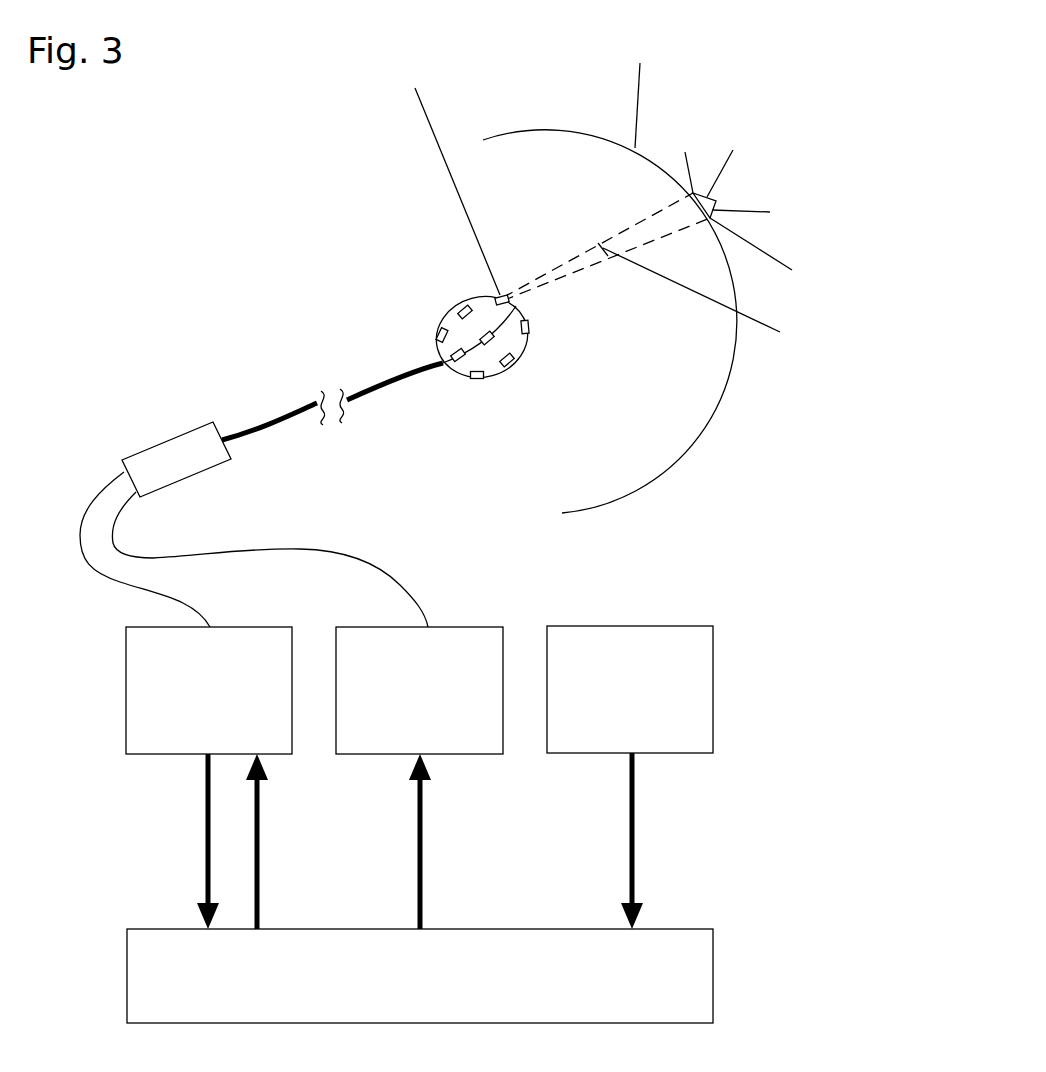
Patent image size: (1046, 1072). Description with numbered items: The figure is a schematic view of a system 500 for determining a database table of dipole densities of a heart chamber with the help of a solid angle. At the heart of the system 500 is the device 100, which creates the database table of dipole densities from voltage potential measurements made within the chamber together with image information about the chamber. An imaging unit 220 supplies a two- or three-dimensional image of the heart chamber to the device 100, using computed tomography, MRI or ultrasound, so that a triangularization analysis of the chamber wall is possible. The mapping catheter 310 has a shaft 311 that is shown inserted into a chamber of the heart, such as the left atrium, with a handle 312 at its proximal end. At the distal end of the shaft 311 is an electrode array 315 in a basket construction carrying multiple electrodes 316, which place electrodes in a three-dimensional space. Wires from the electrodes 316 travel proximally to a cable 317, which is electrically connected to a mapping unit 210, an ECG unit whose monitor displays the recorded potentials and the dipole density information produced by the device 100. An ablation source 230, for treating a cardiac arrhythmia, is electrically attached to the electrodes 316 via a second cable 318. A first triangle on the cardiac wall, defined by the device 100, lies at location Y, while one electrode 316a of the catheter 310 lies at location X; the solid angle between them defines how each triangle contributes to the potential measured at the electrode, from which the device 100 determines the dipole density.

The system 500 is at (140, 189).
The mapping catheter 310 is at (155, 374).
The shaft 311 is at (403, 380).
The handle 312 is at (140, 452).
The electrode array 315 is at (430, 292).
The electrodes 316 is at (478, 380).
The electrode 316a is at (500, 295).
The cable 317 is at (80, 522).
The cable 318 is at (265, 547).
The mapping unit 210 is at (250, 627).
The ablation source 230 is at (460, 627).
The imaging unit 220 is at (667, 626).
The device 100 is at (713, 977).